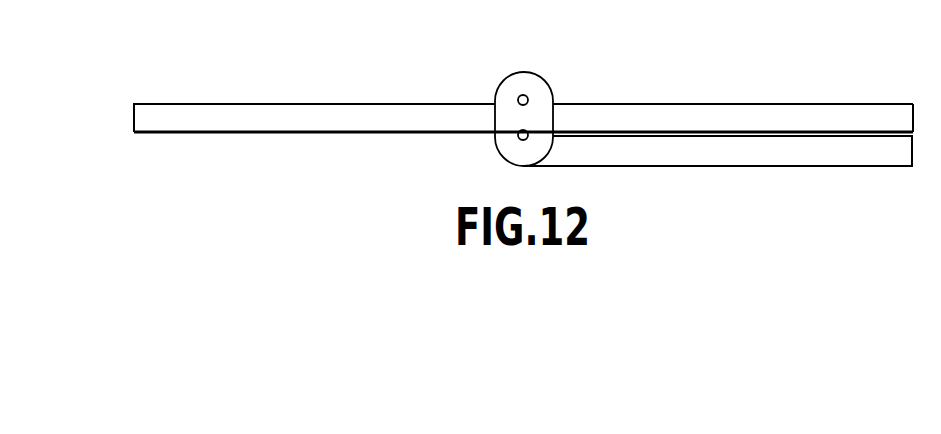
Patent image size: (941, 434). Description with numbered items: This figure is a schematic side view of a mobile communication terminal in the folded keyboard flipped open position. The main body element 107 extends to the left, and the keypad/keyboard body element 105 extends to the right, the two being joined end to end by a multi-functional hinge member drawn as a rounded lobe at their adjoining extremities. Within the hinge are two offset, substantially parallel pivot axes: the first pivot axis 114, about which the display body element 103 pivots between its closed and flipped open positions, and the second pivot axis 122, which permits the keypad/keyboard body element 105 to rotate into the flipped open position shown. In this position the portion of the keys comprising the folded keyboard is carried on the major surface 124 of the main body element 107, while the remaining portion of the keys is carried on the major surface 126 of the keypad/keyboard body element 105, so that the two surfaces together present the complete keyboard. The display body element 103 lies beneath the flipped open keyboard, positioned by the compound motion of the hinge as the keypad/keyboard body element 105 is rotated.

The display body element 103 is at (882, 157).
The keypad/keyboard body element 105 is at (898, 115).
The main body element 107 is at (253, 133).
The first pivot axis 114 is at (519, 140).
The second pivot axis 122 is at (528, 97).
The major surface of the main body element 124 is at (314, 104).
The major surface of the keypad/keyboard body element 126 is at (718, 105).